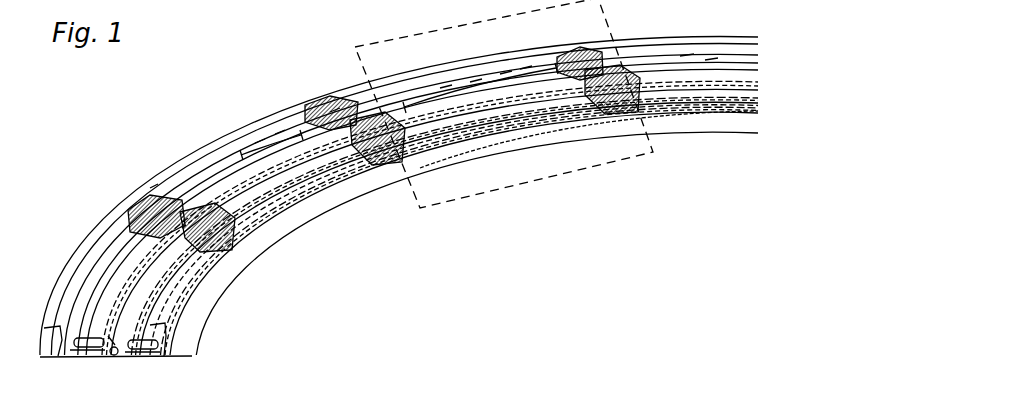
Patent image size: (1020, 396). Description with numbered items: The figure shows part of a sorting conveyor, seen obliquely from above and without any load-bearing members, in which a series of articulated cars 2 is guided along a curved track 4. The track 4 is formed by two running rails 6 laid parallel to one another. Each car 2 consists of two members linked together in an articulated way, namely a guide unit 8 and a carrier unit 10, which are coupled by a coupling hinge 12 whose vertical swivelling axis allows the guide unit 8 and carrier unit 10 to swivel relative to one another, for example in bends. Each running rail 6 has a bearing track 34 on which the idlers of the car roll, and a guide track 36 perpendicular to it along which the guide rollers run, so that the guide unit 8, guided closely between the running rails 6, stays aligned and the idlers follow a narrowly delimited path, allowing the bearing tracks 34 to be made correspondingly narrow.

The car 2 is at (591, 169).
The track 4 is at (376, 202).
The running rail 6 is at (229, 134).
The guide unit 8 is at (563, 41).
The carrier unit 10 is at (478, 79).
The coupling hinge 12 is at (578, 127).
The bearing track 34 is at (90, 278).
The guide track 36 is at (117, 222).